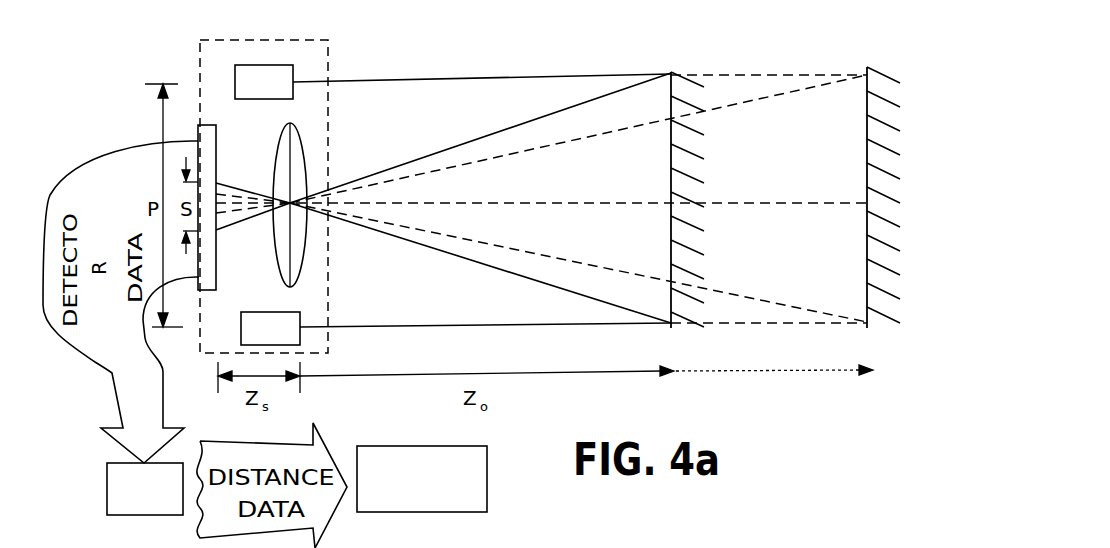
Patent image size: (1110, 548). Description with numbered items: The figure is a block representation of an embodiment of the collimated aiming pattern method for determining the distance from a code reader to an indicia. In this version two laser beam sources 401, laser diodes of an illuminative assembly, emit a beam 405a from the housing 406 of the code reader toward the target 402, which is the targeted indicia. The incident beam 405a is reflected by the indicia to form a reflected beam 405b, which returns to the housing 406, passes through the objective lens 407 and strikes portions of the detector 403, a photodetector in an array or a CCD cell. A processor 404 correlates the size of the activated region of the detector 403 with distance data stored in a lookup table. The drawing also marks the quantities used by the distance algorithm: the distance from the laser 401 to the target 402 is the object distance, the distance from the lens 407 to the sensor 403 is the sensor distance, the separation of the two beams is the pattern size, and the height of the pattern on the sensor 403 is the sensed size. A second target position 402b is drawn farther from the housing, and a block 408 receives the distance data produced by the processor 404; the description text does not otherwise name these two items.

The laser beam source 401 is at (267, 205).
The target 402 is at (676, 174).
The object surface at farther distance 402b is at (871, 183).
The detector 403 is at (212, 125).
The processor 404 is at (145, 489).
The incident beam 405a is at (482, 193).
The reflected beam 405b is at (443, 198).
The housing 406 is at (327, 58).
The objective lens 407 is at (294, 90).
The distance data output 408 is at (422, 479).